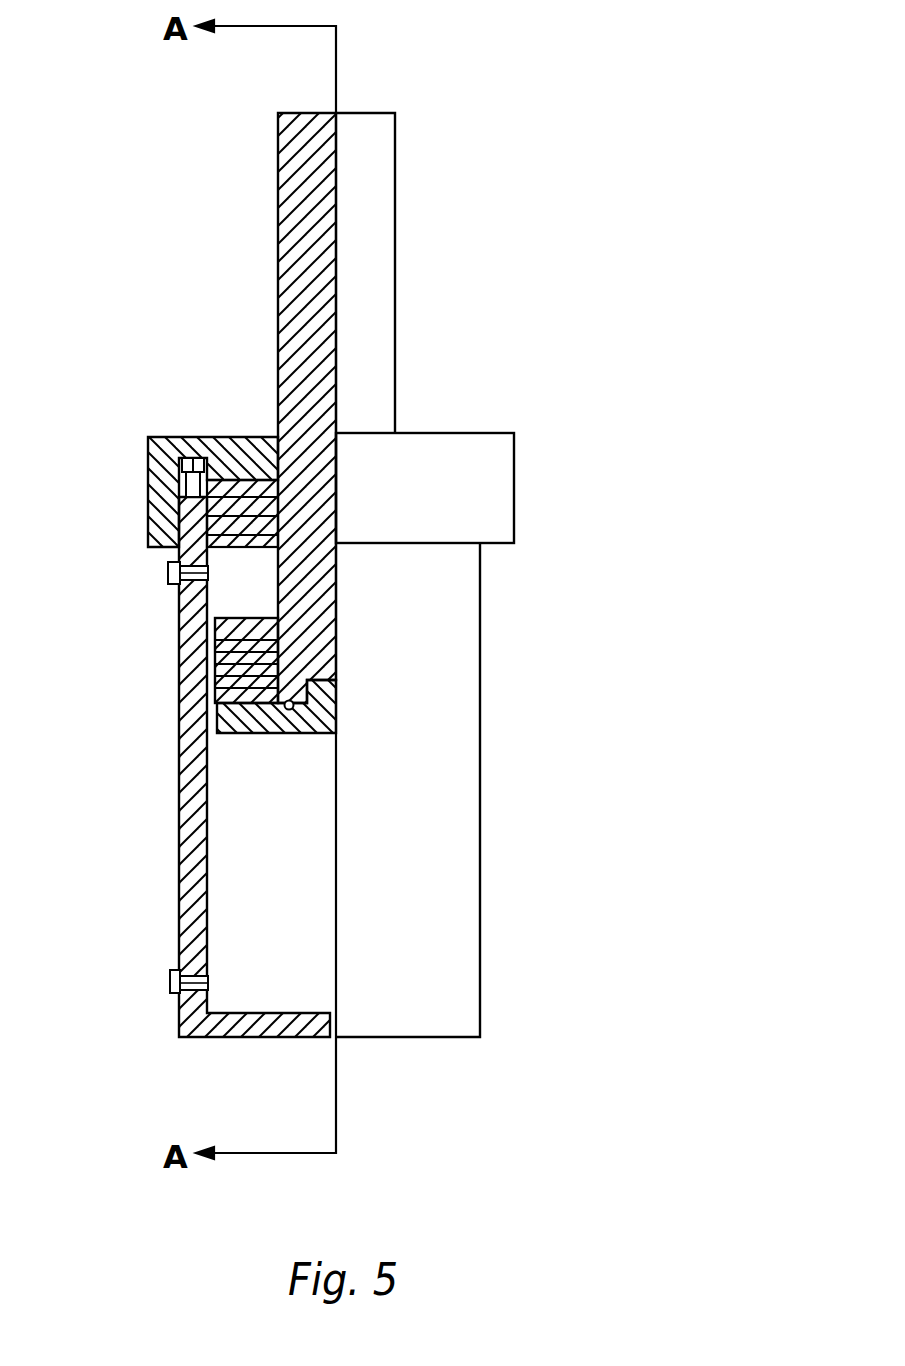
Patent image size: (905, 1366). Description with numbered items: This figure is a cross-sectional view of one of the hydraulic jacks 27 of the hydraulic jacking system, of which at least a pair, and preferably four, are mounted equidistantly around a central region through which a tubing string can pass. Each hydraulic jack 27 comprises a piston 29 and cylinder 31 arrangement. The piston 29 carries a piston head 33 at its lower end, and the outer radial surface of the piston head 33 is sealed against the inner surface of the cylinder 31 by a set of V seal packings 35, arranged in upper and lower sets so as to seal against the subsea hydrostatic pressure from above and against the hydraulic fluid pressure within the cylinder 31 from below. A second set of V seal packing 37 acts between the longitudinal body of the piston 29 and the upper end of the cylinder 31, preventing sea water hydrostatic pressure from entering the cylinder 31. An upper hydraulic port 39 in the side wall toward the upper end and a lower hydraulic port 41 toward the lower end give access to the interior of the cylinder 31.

The hydraulic jack 27 is at (541, 612).
The piston 29 is at (382, 266).
The cylinder 31 is at (453, 850).
The piston head 33 is at (220, 630).
The V seal packings 35 is at (217, 683).
The second set of V seal packing 37 is at (210, 498).
The upper hydraulic port 39 is at (176, 583).
The lower hydraulic port 41 is at (173, 993).